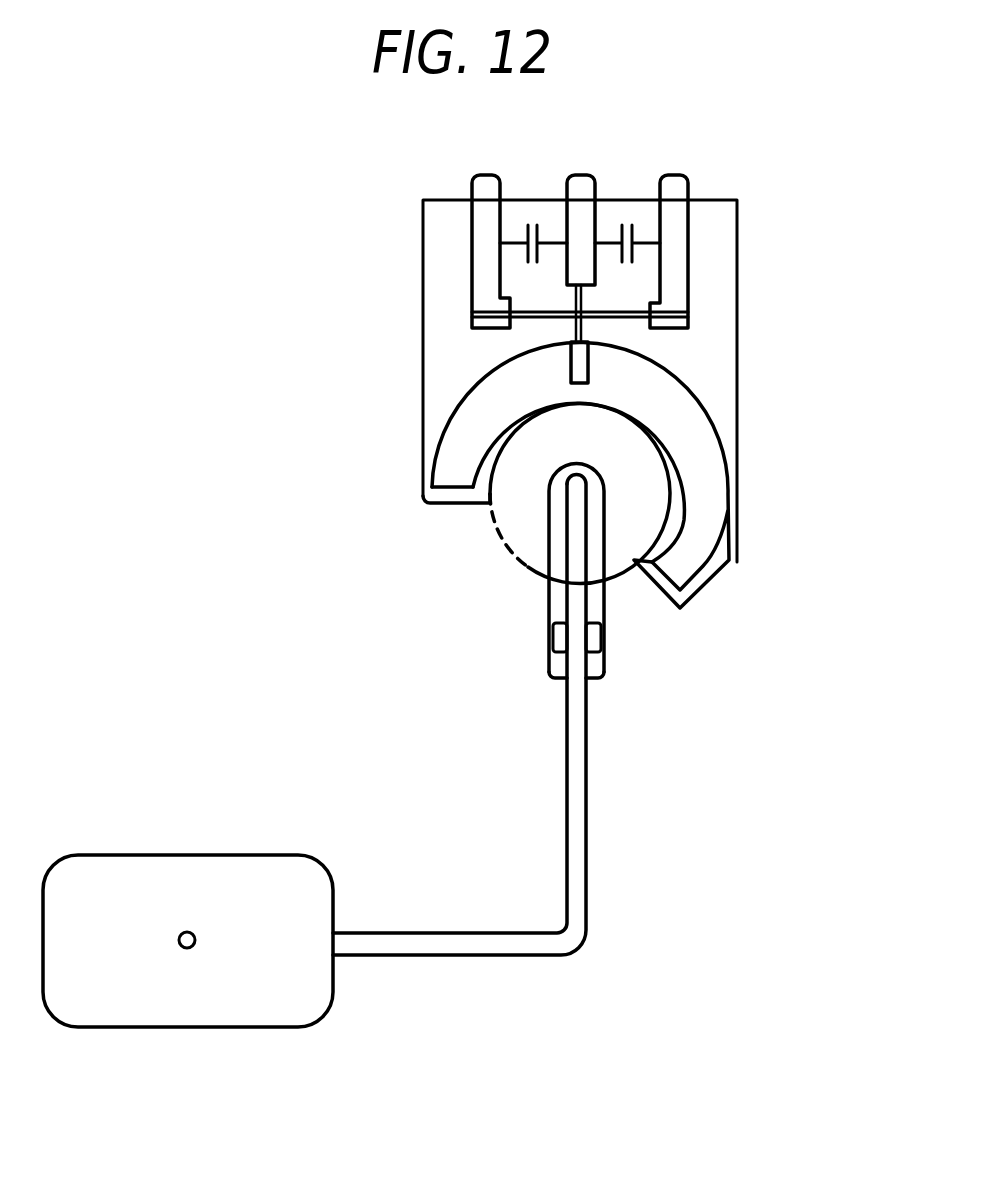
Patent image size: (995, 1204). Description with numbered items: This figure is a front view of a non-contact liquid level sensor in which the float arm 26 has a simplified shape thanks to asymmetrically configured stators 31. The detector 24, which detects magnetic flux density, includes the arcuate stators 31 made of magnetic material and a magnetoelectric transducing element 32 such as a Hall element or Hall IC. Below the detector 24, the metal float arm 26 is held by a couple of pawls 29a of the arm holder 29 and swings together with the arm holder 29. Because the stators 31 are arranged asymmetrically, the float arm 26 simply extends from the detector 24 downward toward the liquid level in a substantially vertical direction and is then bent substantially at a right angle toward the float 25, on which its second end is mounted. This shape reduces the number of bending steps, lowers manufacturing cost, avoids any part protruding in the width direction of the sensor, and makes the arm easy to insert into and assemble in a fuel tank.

The detector 24 is at (755, 310).
The float 25 is at (185, 853).
The float arm 26 is at (588, 792).
The arm holder 29 is at (603, 667).
The pawls 29a is at (547, 640).
The stators 31 is at (433, 462).
The magnetoelectric transducing element 32 is at (571, 363).